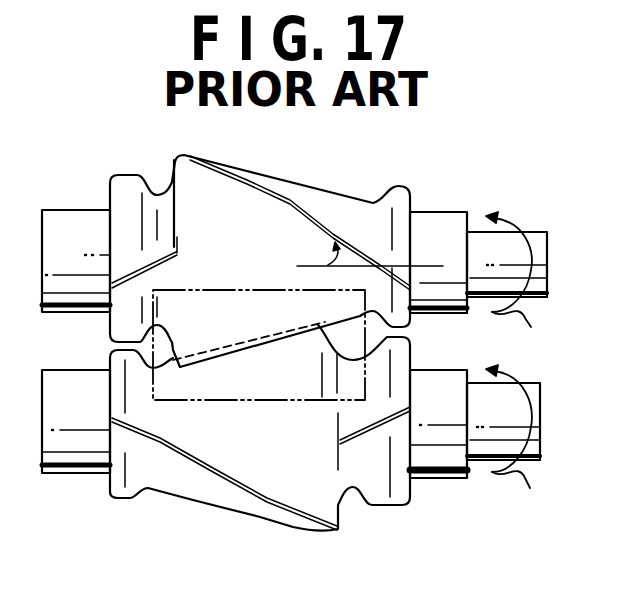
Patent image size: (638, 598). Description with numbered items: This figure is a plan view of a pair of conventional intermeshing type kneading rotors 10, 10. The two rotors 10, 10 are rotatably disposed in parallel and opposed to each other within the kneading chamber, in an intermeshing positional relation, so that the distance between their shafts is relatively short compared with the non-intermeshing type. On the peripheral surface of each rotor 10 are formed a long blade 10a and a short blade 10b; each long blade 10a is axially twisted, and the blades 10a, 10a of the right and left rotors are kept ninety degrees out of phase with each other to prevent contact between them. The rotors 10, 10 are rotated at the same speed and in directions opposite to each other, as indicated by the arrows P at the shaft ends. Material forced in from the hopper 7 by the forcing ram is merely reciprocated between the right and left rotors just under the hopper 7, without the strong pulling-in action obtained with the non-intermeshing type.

The kneading rotor 10 is at (161, 158).
The long blade 10a is at (291, 198).
The short blade 10b is at (134, 276).
The hopper 7 is at (208, 290).
The rotating direction arrow P is at (522, 364).